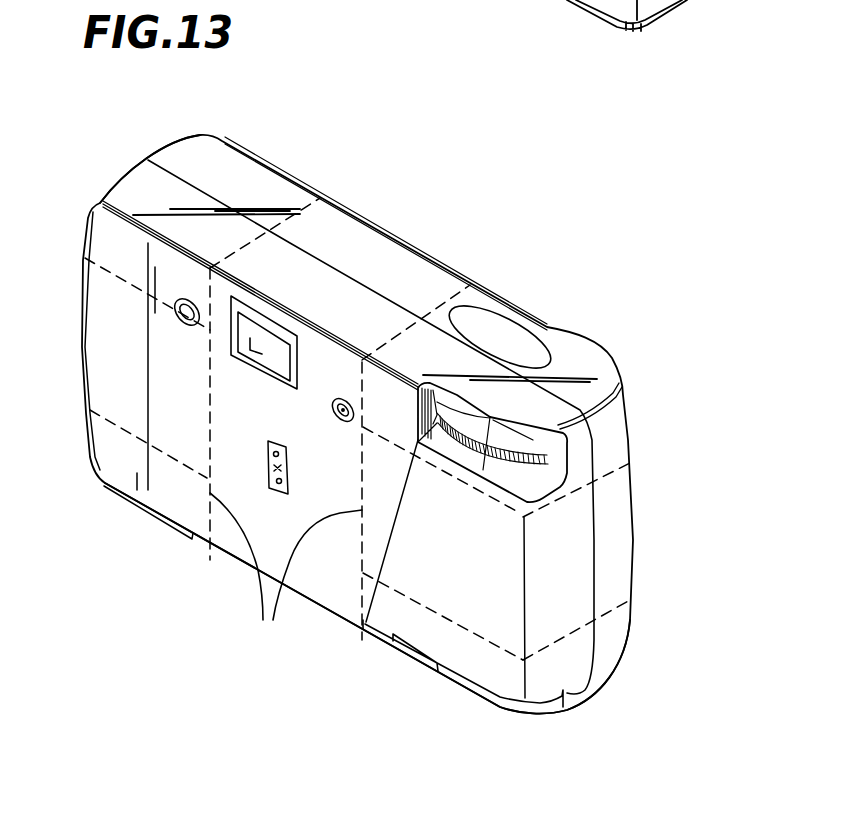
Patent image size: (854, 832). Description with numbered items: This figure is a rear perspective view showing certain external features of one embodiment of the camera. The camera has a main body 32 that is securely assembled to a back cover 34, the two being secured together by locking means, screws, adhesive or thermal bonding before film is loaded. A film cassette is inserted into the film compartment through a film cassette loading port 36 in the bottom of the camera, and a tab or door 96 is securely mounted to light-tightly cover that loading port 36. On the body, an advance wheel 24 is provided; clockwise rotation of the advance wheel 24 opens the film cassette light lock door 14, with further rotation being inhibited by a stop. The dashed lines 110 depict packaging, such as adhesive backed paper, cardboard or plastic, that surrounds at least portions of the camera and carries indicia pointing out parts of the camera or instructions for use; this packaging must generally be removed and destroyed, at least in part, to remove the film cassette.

The main body 32 is at (213, 153).
The back cover 34 is at (143, 192).
The film cassette light lock door 14 is at (437, 243).
The advance wheel 24 is at (568, 484).
The dashed lines 110 is at (286, 578).
The tab or door 96 is at (465, 684).
The film cassette loading port 36 is at (553, 712).